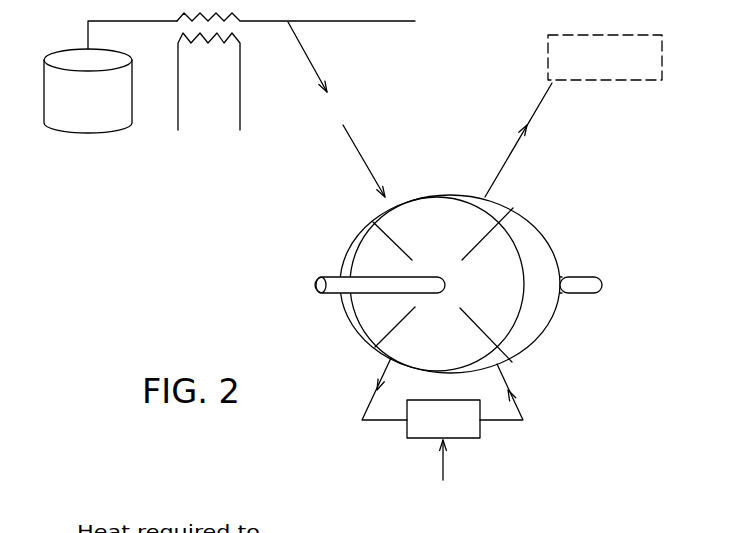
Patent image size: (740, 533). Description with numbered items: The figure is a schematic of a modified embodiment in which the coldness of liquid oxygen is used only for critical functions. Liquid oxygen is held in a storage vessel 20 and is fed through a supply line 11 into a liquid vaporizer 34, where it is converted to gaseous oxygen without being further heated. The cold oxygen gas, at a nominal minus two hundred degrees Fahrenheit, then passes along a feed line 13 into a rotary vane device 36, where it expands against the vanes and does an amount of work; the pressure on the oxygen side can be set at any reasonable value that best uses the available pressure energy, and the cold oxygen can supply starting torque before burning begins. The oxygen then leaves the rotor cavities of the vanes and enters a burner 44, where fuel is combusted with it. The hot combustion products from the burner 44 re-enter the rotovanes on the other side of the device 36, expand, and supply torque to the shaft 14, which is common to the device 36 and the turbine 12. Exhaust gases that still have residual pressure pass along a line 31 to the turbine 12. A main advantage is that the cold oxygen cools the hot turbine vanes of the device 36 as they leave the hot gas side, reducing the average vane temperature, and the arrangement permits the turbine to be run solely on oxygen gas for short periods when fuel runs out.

The oxygen supply line 11 is at (370, 21).
The turbine 12 is at (598, 80).
The cold oxygen gas feed line 13 is at (366, 162).
The shaft 14 is at (330, 292).
The liquid oxygen (LOX) tank 20 is at (87, 134).
The hot gas line to turbine 31 is at (507, 165).
The liquid vaporizer 34 is at (210, 43).
The rotary vane device 36 is at (543, 318).
The burner 44 is at (482, 430).